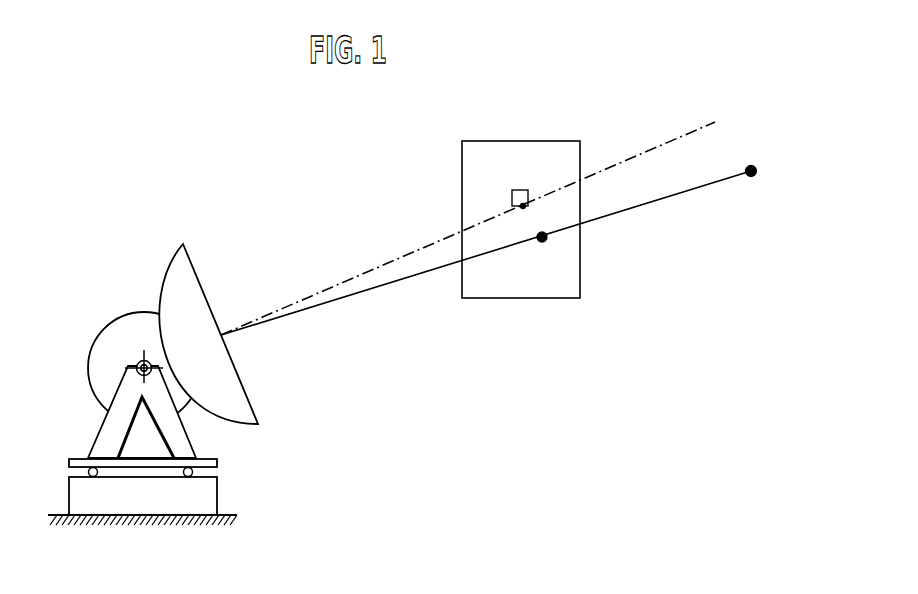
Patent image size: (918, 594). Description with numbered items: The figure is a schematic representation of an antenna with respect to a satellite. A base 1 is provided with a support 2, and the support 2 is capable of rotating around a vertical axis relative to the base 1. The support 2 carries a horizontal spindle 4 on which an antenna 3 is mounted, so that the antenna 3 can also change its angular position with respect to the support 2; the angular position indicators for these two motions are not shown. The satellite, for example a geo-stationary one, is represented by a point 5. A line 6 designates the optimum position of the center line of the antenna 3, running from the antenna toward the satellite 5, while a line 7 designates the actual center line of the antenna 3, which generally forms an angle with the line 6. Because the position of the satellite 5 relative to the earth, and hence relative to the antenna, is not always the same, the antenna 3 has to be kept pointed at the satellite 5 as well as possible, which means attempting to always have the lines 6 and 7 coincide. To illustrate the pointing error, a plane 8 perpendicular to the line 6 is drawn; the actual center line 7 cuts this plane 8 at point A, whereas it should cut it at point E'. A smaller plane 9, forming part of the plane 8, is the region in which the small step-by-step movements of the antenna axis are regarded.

The base 1 is at (207, 494).
The support 2 is at (175, 431).
The antenna 3 is at (178, 278).
The horizontal spindle 4 is at (138, 364).
The point representing the satellite 5 is at (751, 166).
The line designating optimum center line position 6 is at (362, 292).
The actual center line of the antenna 7 is at (365, 272).
The plane 8 is at (472, 160).
The plane 9 is at (512, 197).
The point A is at (542, 213).
The point E' is at (554, 255).